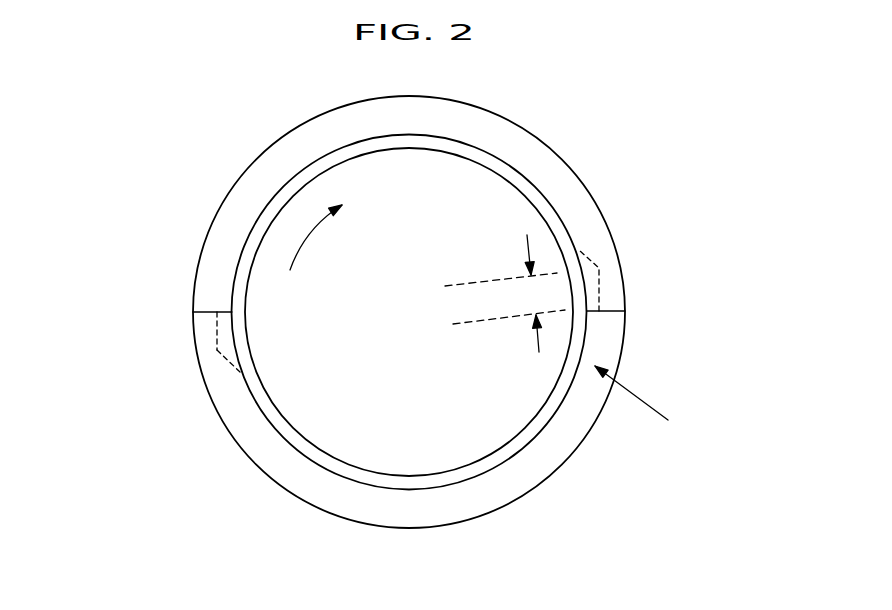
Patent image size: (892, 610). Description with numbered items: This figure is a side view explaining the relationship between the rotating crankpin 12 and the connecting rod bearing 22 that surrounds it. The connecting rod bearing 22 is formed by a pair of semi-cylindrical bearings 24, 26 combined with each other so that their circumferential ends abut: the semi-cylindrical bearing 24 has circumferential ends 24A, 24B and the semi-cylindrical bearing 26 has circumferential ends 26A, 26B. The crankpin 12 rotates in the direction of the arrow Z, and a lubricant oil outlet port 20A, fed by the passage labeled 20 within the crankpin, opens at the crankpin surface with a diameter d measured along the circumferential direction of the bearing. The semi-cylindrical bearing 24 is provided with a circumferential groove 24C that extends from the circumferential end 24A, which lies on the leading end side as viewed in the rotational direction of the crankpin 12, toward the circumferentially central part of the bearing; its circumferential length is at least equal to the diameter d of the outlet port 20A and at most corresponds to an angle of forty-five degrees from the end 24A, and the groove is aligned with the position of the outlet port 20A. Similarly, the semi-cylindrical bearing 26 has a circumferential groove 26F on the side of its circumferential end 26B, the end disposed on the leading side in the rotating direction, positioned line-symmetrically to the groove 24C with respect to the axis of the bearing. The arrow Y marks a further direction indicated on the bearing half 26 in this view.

The crankpin 12 is at (318, 433).
The gap between ring ends 20 is at (477, 322).
The lubricant oil outlet port 20A is at (575, 288).
The connecting rod bearing 22 is at (627, 195).
The semi-cylindrical bearing 24 is at (228, 226).
The circumferential end 24A is at (613, 316).
The circumferential end 24B is at (203, 317).
The circumferential groove 24C is at (599, 268).
The semi-cylindrical bearing 26 is at (572, 430).
The circumferential end 26A is at (608, 308).
The circumferential end 26B is at (209, 307).
The circumferential groove 26F is at (217, 350).
The diameter of the lubricant oil outlet port d is at (533, 293).
The direction Y is at (640, 406).
The rotational direction of the crankpin Z is at (316, 237).